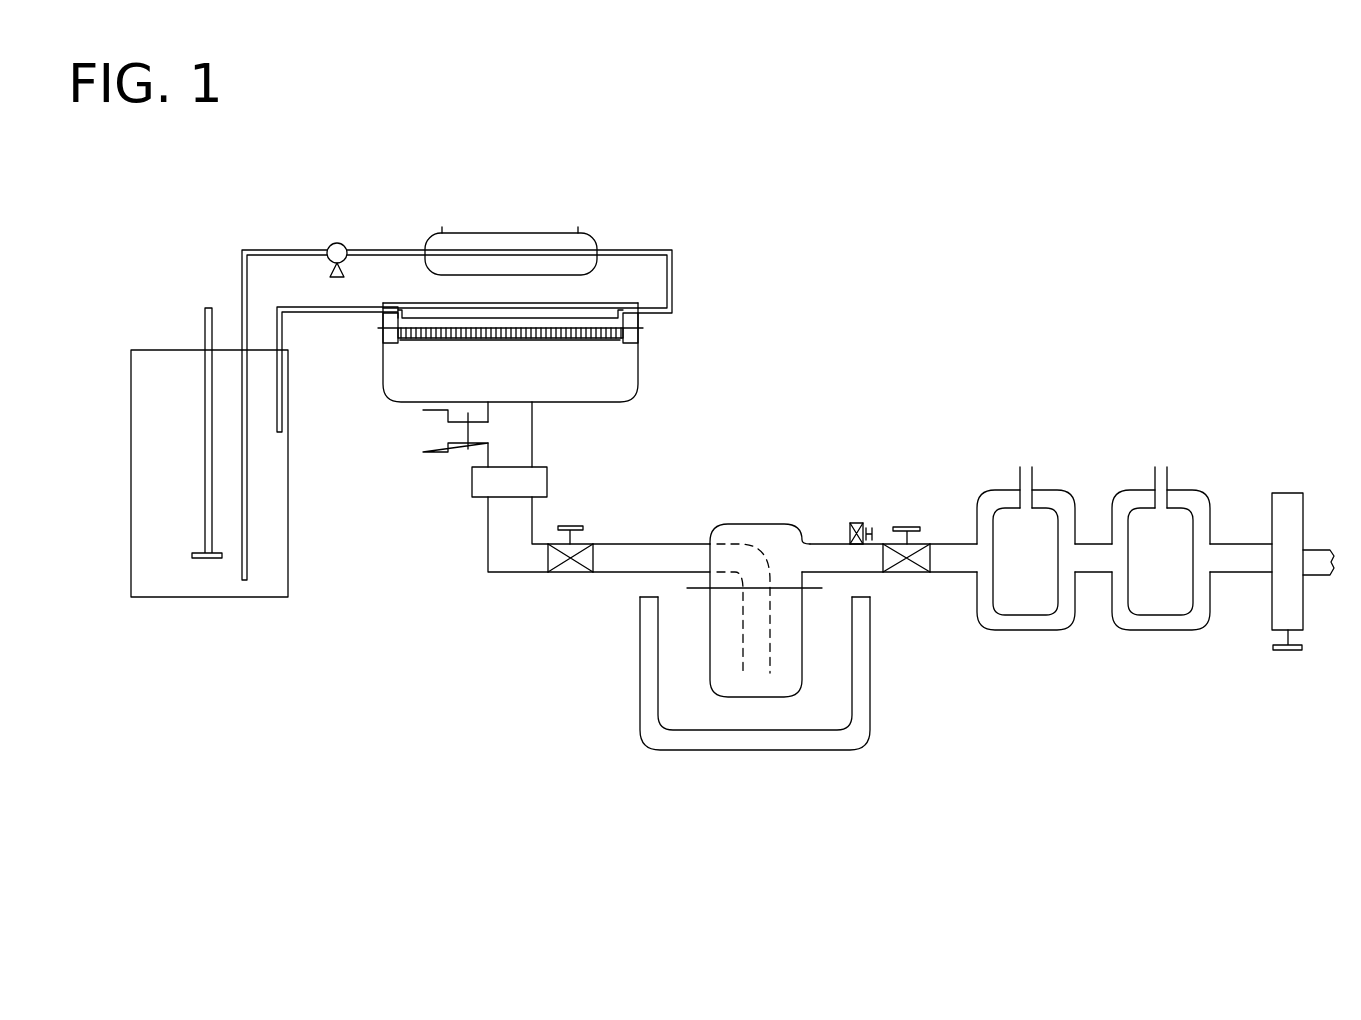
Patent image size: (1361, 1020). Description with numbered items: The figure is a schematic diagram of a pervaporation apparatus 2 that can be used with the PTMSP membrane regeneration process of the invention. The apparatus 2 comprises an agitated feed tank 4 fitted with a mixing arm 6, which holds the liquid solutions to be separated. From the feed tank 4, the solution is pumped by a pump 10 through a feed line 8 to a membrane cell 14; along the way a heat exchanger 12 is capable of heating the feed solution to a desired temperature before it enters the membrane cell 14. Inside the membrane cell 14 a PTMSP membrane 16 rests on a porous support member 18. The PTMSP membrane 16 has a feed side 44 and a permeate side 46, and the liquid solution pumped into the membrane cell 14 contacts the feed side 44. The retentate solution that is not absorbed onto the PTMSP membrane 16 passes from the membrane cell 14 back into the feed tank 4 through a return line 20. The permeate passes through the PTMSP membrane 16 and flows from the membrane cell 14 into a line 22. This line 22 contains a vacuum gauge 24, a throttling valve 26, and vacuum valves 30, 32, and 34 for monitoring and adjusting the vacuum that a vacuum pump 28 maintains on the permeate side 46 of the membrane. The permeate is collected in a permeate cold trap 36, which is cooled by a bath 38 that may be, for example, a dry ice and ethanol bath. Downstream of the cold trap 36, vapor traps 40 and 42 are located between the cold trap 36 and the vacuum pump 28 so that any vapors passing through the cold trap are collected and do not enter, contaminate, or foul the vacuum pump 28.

The pervaporation apparatus 2 is at (494, 134).
The feed tank 4 is at (187, 573).
The mixing arm 6 is at (203, 393).
The feed line 8 is at (270, 250).
The pump 10 is at (340, 244).
The heat exchanger 12 is at (578, 230).
The membrane cell 14 is at (383, 368).
The PTMSP membrane 16 is at (637, 323).
The porous support member 18 is at (600, 342).
The return line 20 is at (305, 307).
The line 22 is at (512, 445).
The vacuum gauge 24 is at (423, 448).
The throttling valve 26 is at (547, 485).
The vacuum pump 28 is at (1288, 492).
The vacuum valve 30 is at (570, 573).
The vacuum valve 32 is at (858, 523).
The vacuum valve 34 is at (910, 573).
The permeate cold trap 36 is at (778, 685).
The bath 38 is at (692, 707).
The vapor trap 40 is at (1012, 632).
The vapor trap 42 is at (1162, 632).
The feed side 44 is at (605, 327).
The permeate side 46 is at (533, 340).